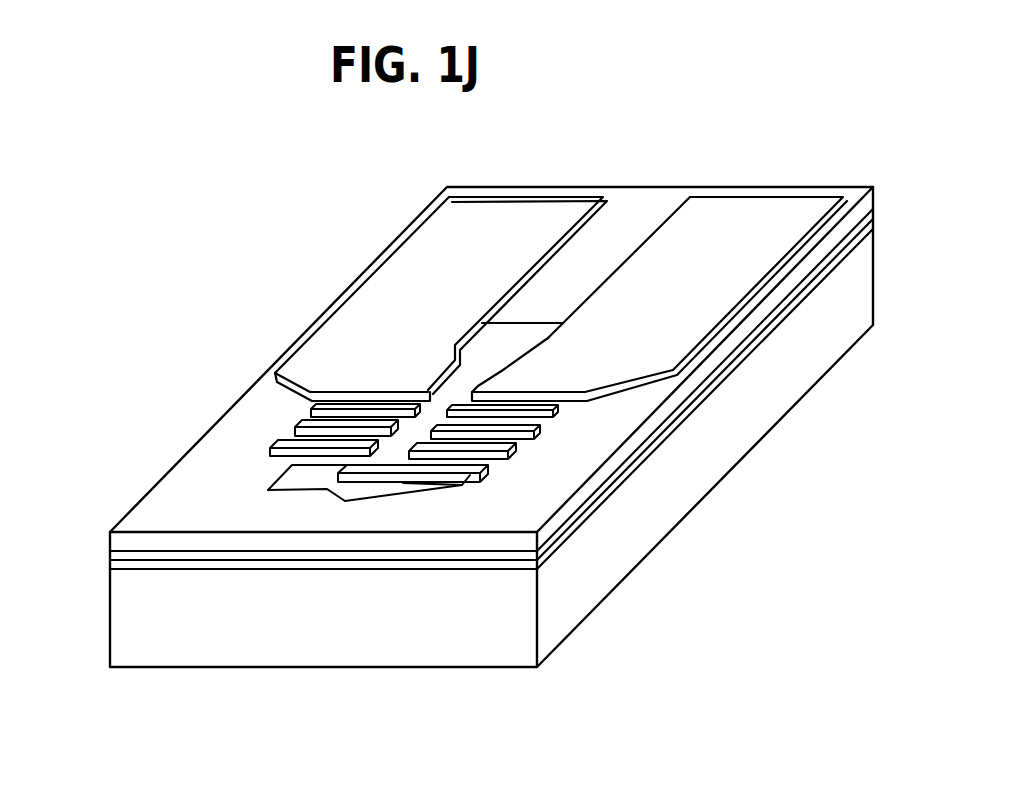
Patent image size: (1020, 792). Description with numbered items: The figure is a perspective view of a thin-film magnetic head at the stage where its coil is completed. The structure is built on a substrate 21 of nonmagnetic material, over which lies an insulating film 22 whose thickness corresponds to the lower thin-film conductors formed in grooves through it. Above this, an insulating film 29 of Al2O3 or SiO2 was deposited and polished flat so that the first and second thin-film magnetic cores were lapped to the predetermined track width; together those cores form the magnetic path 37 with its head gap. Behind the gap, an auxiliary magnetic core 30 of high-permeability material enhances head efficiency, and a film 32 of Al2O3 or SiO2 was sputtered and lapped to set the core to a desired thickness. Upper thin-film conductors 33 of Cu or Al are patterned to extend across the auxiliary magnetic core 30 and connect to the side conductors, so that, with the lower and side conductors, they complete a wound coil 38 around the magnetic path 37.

The substrate 21 is at (715, 457).
The insulating film 22 is at (118, 568).
The insulating film 29 is at (120, 556).
The film 32 is at (118, 540).
The auxiliary magnetic core 30 is at (290, 477).
The upper thin-film conductors 33 is at (380, 315).
The magnetic path 37 is at (513, 338).
The wound coil 38 is at (500, 446).